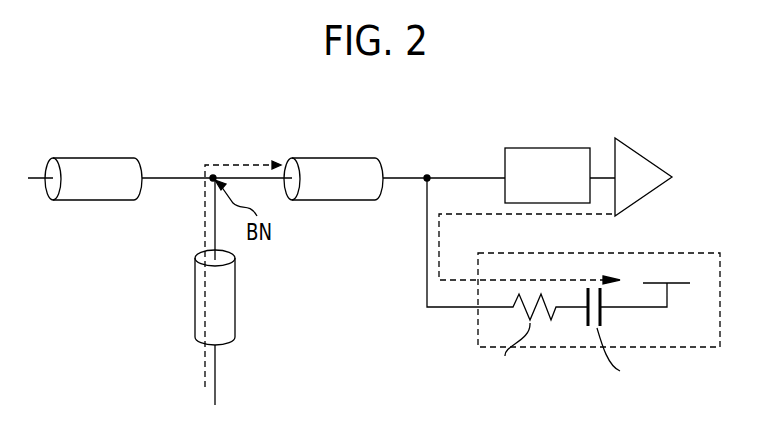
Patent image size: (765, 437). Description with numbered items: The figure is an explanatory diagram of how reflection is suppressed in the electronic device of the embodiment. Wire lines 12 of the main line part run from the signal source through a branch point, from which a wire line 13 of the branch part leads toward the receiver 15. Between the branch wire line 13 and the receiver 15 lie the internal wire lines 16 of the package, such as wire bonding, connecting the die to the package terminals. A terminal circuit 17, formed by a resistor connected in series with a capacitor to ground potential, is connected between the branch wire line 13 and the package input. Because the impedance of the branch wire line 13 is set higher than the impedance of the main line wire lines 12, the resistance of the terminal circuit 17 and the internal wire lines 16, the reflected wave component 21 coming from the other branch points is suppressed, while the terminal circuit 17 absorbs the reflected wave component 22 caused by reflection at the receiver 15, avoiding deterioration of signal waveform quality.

The wire line of main line part 12 is at (96, 202).
The wire line of branch part 13 is at (338, 200).
The receiver 15 is at (646, 144).
The internal wire line of the package 16 is at (548, 147).
The terminal circuit 17 is at (627, 253).
The reflected wave component from other branch points 21 is at (206, 363).
The reflected wave component from receiver reflection 22 is at (439, 261).